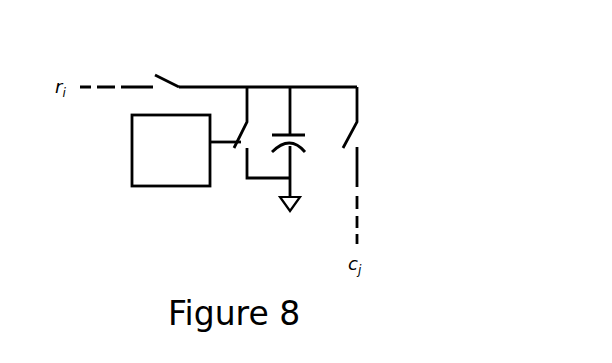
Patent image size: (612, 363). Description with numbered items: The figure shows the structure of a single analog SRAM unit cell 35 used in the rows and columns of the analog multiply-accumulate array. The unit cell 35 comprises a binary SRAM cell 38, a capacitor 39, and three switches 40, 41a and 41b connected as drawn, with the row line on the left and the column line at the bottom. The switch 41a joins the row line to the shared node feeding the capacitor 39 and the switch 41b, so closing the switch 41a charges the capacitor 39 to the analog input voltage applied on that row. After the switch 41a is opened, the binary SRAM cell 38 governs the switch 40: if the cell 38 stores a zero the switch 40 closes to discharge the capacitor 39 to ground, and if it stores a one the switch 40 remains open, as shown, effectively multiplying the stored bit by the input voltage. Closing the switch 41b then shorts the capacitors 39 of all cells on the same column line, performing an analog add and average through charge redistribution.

The SRAM unit cell 35 is at (415, 89).
The binary SRAM cell 38 is at (132, 150).
The capacitor 39 is at (289, 132).
The switch 40 is at (244, 127).
The switch 41a is at (170, 80).
The switch 41b is at (355, 127).